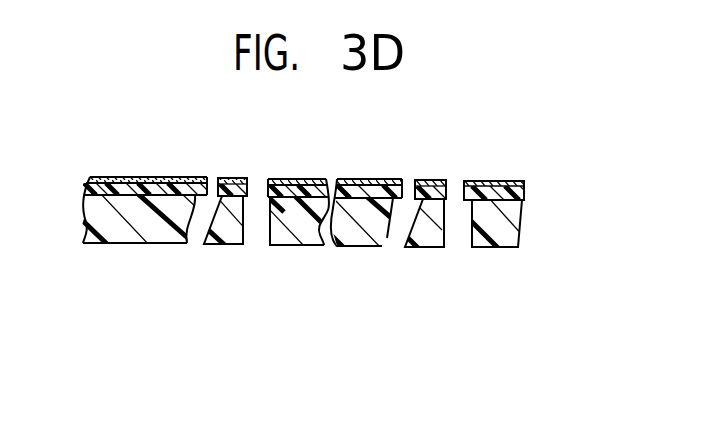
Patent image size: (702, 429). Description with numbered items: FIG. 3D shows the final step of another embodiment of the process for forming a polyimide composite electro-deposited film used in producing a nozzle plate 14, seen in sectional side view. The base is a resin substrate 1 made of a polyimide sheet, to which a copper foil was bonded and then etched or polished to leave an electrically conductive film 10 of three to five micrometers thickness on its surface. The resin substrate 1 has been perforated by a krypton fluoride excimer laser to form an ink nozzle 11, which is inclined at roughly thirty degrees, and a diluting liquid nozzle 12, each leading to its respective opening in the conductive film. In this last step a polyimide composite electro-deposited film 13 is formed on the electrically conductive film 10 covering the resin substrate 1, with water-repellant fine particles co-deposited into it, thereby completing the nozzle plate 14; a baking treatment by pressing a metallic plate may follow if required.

The resin substrate 1 is at (508, 228).
The electrically conductive film 10 is at (492, 181).
The ink nozzle 11 is at (187, 243).
The diluting liquid nozzle 12 is at (247, 203).
The polyimide composite electro-deposited film 13 is at (352, 179).
The nozzle plate 14 is at (143, 150).